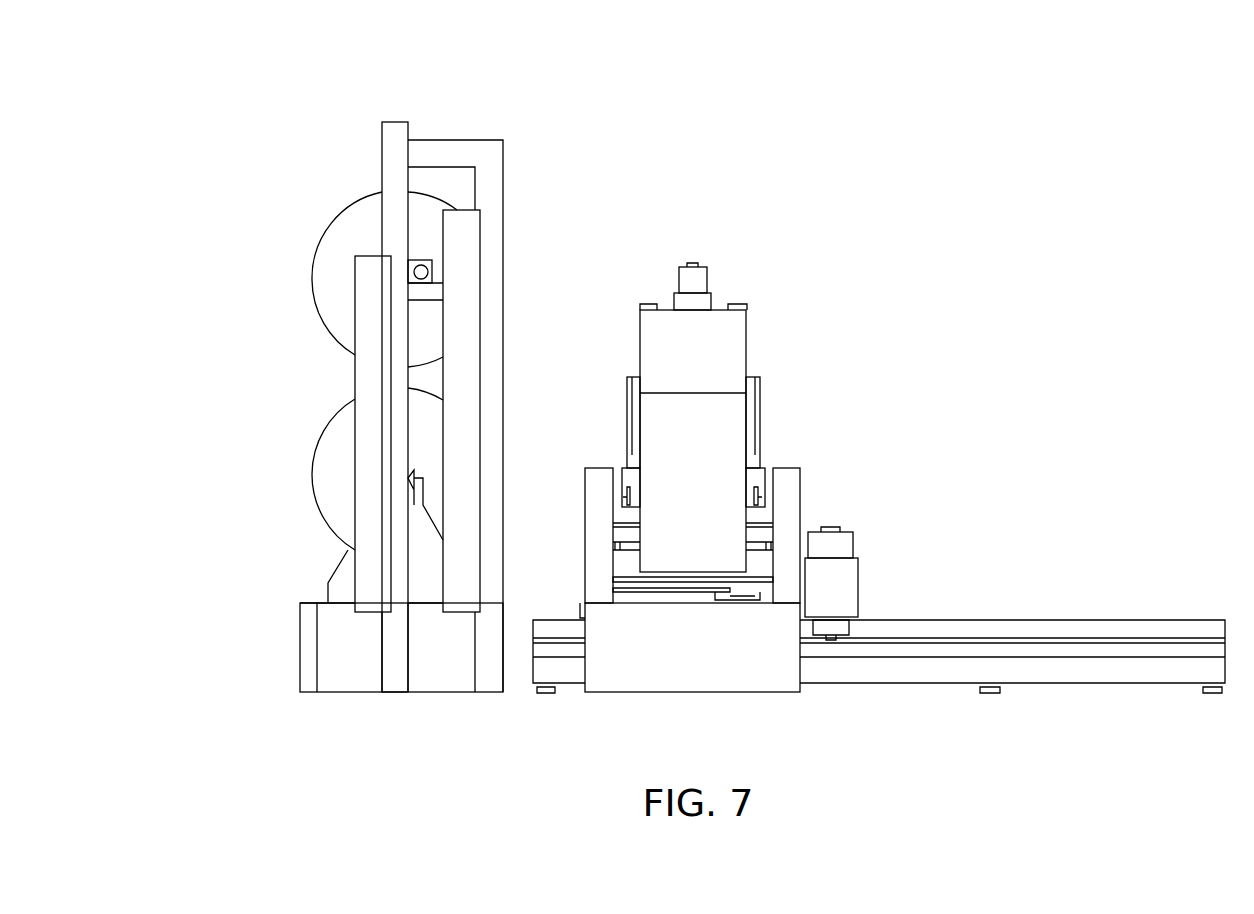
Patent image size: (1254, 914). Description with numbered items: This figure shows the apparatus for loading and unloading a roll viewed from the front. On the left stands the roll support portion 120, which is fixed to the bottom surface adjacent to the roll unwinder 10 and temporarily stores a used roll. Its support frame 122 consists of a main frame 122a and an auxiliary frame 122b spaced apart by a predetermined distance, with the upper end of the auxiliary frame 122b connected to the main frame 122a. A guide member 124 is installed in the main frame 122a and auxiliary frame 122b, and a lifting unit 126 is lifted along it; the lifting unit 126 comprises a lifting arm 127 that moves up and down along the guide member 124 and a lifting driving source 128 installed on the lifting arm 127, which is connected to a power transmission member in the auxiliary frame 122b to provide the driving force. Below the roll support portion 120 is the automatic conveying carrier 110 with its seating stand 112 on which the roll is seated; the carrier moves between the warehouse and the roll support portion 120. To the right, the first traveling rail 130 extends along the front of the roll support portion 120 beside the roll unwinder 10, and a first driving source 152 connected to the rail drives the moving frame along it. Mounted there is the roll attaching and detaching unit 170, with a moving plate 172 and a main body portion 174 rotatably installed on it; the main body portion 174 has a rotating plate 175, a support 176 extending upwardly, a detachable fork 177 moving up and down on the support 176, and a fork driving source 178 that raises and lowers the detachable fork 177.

The roll unwinder 10 is at (695, 677).
The automatic conveying carrier 110 is at (340, 658).
The seating stand 112 is at (340, 583).
The roll support portion 120 is at (352, 136).
The support frame 122 is at (532, 50).
The main frame 122a is at (393, 155).
The auxiliary frame 122b is at (487, 197).
The guide member 124 is at (490, 415).
The lifting unit 126 is at (235, 213).
The lifting arm 127 is at (420, 292).
The lifting driving source 128 is at (418, 260).
The first traveling rail 130 is at (1105, 650).
The first driving source 152 is at (845, 585).
The roll attaching and detaching unit 170 is at (547, 148).
The moving plate 172 is at (613, 533).
The main body portion 174 is at (597, 197).
The rotating plate 175 is at (620, 523).
The support 176 is at (647, 305).
The detachable fork 177 is at (757, 405).
The fork driving source 178 is at (700, 280).